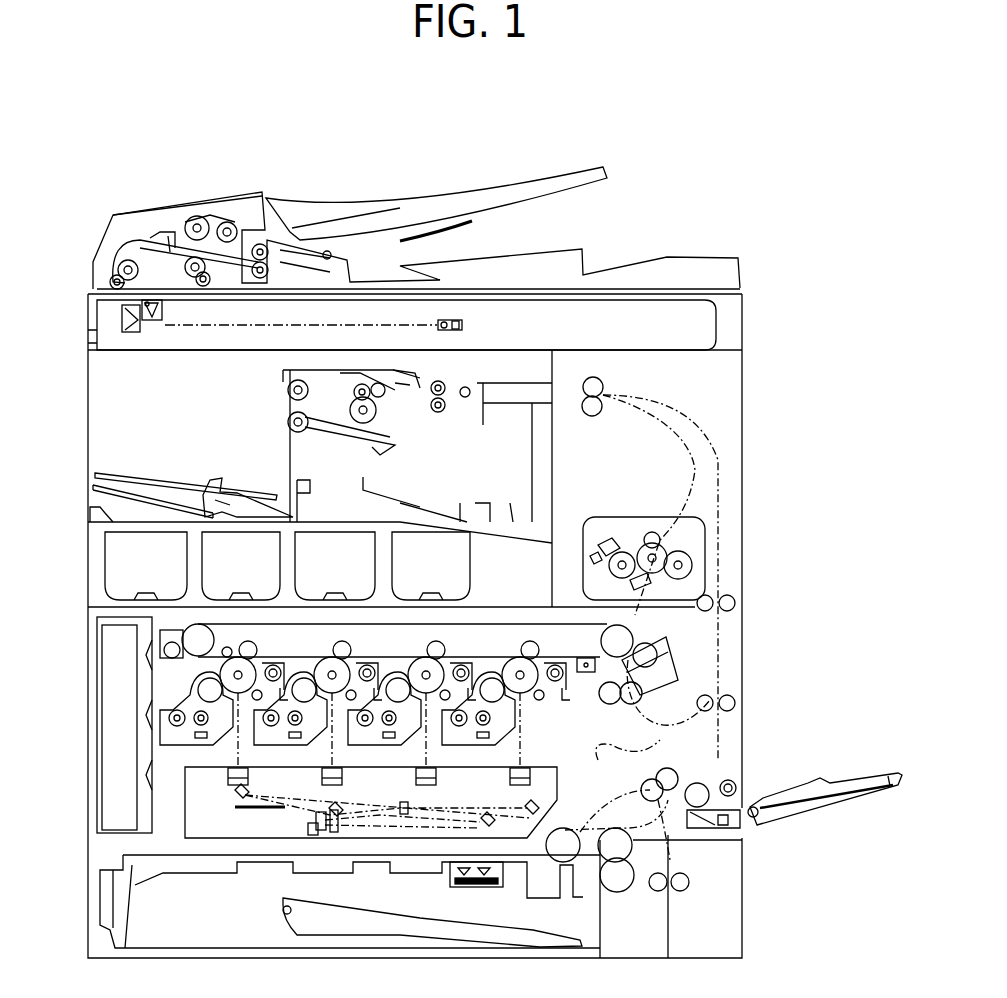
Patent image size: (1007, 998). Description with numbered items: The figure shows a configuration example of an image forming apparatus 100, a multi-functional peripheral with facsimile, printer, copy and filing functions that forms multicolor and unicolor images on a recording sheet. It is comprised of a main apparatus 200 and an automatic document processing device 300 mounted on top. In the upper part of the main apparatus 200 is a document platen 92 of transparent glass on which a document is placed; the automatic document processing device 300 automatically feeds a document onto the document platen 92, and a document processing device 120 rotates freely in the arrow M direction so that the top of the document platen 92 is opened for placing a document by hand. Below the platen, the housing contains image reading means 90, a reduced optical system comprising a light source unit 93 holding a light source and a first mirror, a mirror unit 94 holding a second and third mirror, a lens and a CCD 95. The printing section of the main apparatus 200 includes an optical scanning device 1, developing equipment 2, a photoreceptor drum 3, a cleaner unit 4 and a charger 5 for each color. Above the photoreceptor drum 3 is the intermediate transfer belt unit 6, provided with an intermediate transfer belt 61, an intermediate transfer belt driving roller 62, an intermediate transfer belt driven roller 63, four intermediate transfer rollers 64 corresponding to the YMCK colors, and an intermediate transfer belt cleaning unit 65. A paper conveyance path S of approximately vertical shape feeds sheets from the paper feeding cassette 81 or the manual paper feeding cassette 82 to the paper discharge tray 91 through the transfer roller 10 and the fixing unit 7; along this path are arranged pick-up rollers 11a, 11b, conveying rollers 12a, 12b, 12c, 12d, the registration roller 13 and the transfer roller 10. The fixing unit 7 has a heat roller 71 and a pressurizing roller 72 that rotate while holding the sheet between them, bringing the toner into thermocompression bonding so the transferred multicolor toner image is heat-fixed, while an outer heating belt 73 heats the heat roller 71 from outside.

The image forming apparatus 100 is at (748, 232).
The automatic document processing device 300 is at (205, 195).
The document processing device 120 is at (513, 162).
The arrow direction M is at (439, 163).
The image reading means 90 is at (718, 321).
The document platen 92 is at (494, 284).
The light source unit 93 is at (156, 322).
The mirror unit 94 is at (130, 335).
The CCD 95 is at (462, 325).
The main apparatus 200 is at (84, 490).
The paper discharge tray 91 is at (252, 490).
The intermediate transfer belt unit 6 is at (422, 609).
The intermediate transfer belt 61 is at (535, 624).
The intermediate transfer belt driving roller 62 is at (640, 628).
The intermediate transfer belt driven roller 63 is at (205, 632).
The intermediate transfer belt cleaning unit 65 is at (172, 630).
The photoreceptor drum 3 is at (240, 658).
The intermediate transfer roller 64 is at (257, 645).
The cleaner unit 4 is at (280, 664).
The developing equipment 2 is at (205, 703).
The charger 5 is at (246, 705).
The optical scanning device 1 is at (560, 795).
The fixing unit 7 is at (684, 531).
The heat roller 71 is at (652, 538).
The pressurizing roller 72 is at (692, 564).
The outer heating belt 73 is at (637, 545).
The transfer roller 10 is at (660, 657).
The registration roller 13 is at (643, 693).
The conveying roller 12a is at (676, 786).
The conveying roller 12b is at (594, 417).
The conveying roller 12c is at (736, 603).
The conveying roller 12d is at (736, 703).
The pick-up roller 11a is at (570, 835).
The pick-up roller 11b is at (742, 790).
The paper conveyance path S is at (641, 627).
The manual paper feeding cassette 82 is at (838, 775).
The paper feeding cassette 81 is at (370, 905).